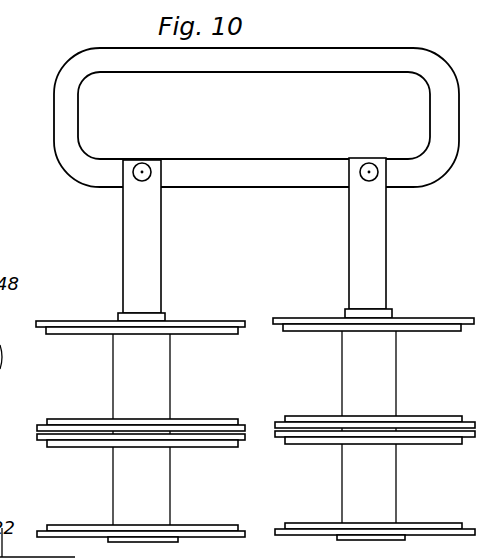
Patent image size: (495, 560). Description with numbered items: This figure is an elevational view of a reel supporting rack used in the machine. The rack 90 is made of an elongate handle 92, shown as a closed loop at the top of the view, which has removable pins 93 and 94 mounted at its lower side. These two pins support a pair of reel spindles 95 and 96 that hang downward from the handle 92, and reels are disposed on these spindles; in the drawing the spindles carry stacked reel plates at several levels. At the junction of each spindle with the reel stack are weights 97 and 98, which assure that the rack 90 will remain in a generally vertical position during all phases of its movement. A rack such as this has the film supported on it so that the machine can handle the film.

The rack 90 is at (50, 117).
The elongate handle 92 is at (328, 60).
The removable pin 93 is at (143, 163).
The removable pin 94 is at (366, 170).
The reel spindle 95 is at (145, 248).
The reel spindle 96 is at (374, 228).
The weight 97 is at (164, 313).
The weight 98 is at (391, 310).